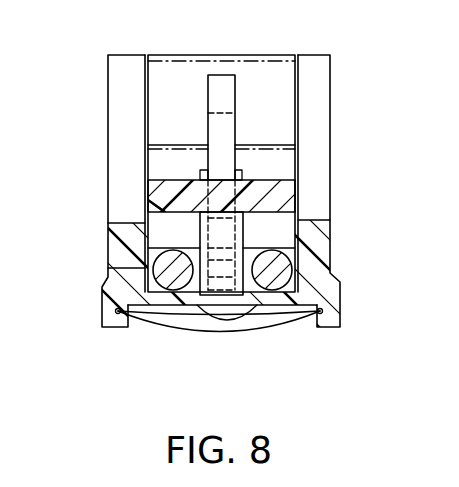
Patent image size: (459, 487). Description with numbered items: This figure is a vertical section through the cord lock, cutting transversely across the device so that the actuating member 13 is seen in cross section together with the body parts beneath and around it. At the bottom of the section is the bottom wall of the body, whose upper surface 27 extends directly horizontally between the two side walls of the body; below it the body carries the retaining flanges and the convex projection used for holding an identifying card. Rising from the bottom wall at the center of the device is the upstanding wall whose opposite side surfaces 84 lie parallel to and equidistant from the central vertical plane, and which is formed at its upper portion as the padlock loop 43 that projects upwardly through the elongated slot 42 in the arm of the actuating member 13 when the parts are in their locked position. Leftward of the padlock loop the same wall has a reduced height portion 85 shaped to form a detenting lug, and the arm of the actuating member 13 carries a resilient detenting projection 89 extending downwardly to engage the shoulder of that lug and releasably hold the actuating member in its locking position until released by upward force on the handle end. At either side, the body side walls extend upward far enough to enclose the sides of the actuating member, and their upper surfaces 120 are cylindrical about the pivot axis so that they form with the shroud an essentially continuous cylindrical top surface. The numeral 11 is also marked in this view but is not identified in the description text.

The upper surfaces of side walls 120 is at (125, 53).
The padlock loop 43 is at (223, 75).
The side surfaces of wall 84 is at (208, 117).
The slot 42 is at (200, 172).
The actuating member 13 is at (165, 195).
The reduced height portion of wall 85 is at (243, 233).
The detenting projection 89 is at (203, 230).
The ball 11 is at (160, 271).
The upper surface of bottom wall 27 is at (175, 308).